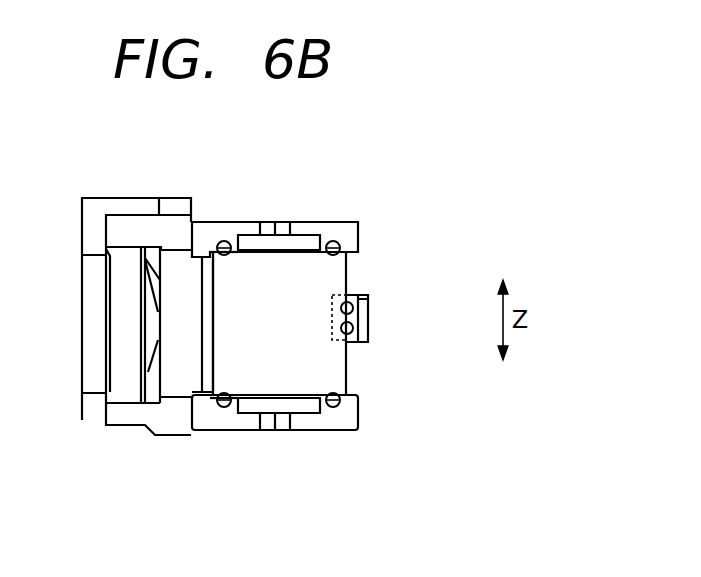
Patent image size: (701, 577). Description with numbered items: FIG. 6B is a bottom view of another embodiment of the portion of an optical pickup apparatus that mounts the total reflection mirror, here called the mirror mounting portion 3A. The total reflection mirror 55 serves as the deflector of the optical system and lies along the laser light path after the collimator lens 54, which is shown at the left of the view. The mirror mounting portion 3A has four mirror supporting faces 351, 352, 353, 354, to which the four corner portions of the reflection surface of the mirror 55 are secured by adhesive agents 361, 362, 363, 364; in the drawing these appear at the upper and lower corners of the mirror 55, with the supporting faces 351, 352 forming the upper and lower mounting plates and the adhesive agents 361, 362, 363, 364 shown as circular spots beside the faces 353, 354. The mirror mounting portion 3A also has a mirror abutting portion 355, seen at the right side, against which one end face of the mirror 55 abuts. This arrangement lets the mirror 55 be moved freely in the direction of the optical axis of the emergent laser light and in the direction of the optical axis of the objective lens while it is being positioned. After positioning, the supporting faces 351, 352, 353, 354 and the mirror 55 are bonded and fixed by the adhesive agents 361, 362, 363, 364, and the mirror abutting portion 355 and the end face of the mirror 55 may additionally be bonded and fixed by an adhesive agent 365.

The mirror mounting portion 3A is at (386, 176).
The collimator lens 54 is at (120, 358).
The total reflection mirror 55 is at (318, 298).
The mirror supporting face 351 is at (358, 235).
The mirror supporting face 352 is at (358, 400).
The mirror supporting face 353 is at (208, 240).
The mirror supporting face 354 is at (207, 397).
The mirror abutting portion 355 is at (368, 299).
The adhesive agent 361 is at (330, 234).
The adhesive agent 362 is at (333, 406).
The adhesive agent 363 is at (223, 234).
The adhesive agent 364 is at (225, 406).
The adhesive agent 365 is at (352, 310).